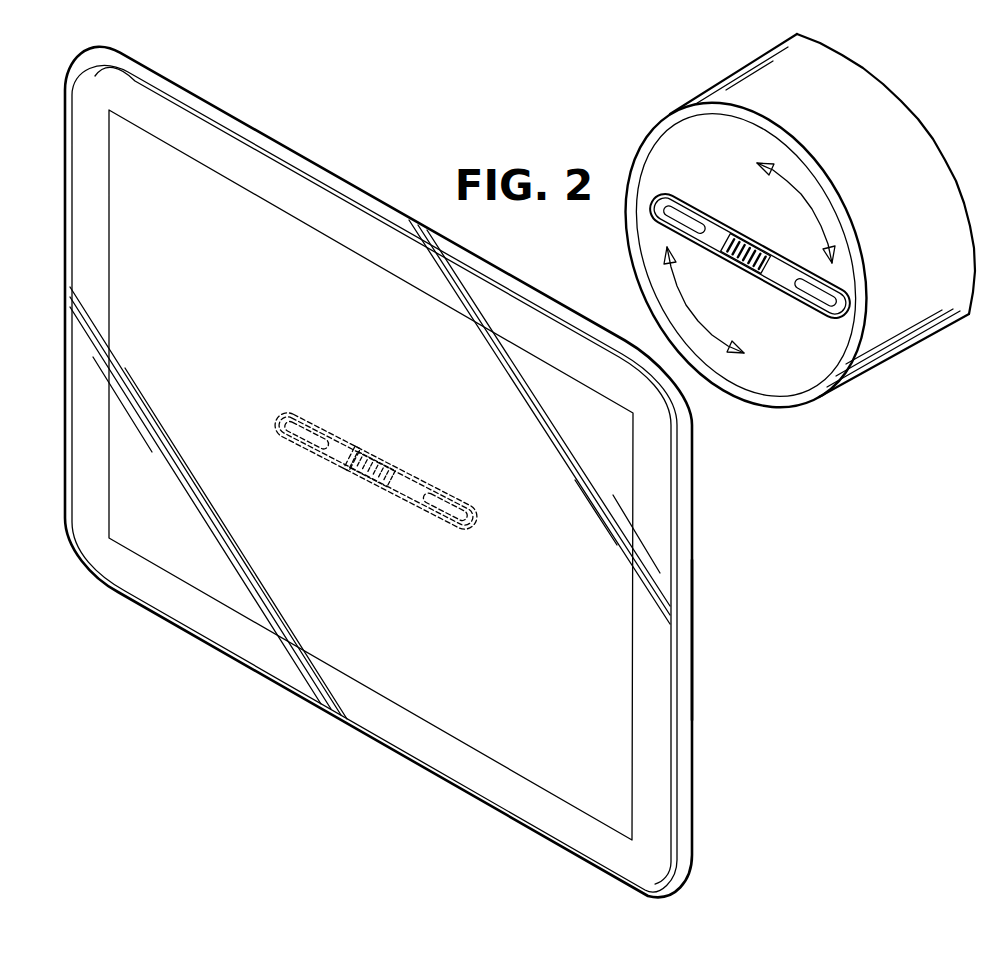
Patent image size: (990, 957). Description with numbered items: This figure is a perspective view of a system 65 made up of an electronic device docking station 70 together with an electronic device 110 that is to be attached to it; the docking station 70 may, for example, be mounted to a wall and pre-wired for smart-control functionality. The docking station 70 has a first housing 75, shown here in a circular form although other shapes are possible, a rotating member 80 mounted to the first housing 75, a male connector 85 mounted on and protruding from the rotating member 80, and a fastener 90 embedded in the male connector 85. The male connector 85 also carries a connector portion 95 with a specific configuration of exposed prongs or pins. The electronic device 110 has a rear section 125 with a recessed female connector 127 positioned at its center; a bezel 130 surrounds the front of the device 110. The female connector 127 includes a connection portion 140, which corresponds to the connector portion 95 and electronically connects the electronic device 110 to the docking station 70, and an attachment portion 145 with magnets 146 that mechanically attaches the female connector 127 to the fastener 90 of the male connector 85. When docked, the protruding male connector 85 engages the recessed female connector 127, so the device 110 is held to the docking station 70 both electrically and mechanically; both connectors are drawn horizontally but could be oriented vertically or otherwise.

The system 65 is at (848, 588).
The electronic device docking station 70 is at (777, 237).
The first housing 75 is at (887, 380).
The rotating member 80 is at (785, 373).
The male connector 85 is at (727, 215).
The fastener 90 is at (675, 213).
The connector portion 95 is at (770, 262).
The electronic device 110 is at (318, 148).
The rear section 125 is at (695, 636).
The female connector 127 is at (322, 412).
The bezel 130 is at (371, 237).
The connection portion 140 is at (402, 477).
The attachment portion 145 is at (343, 438).
The magnets 146 is at (300, 443).